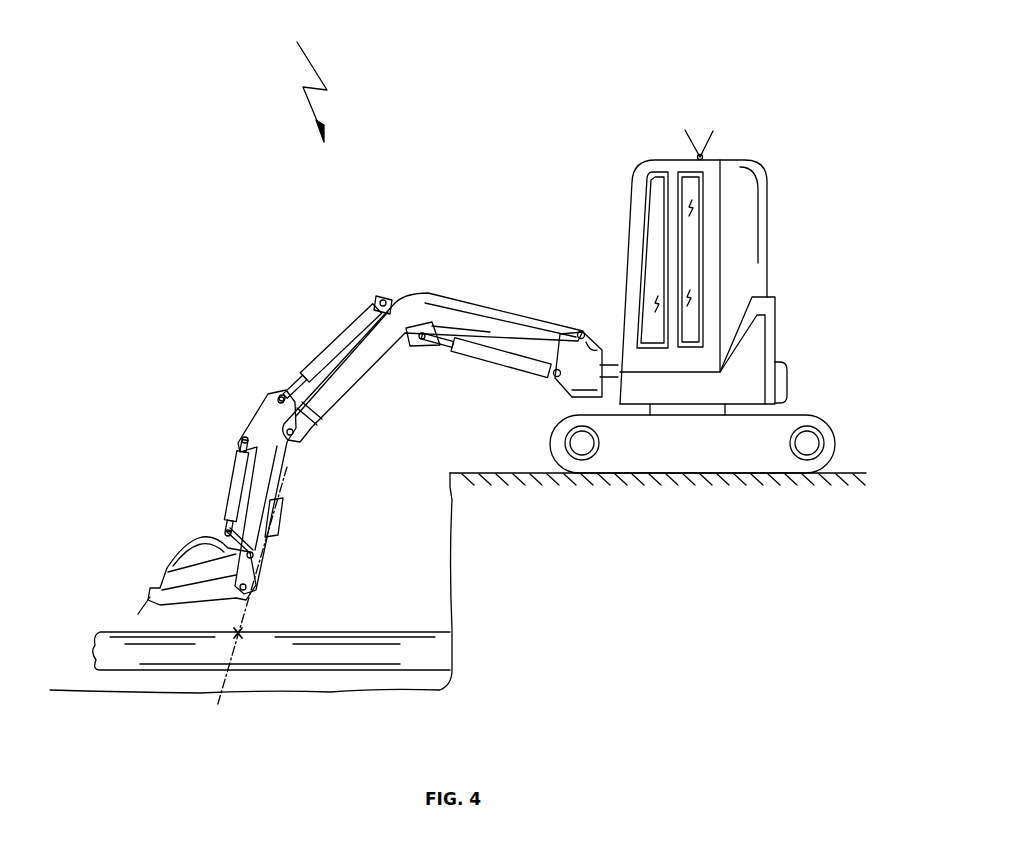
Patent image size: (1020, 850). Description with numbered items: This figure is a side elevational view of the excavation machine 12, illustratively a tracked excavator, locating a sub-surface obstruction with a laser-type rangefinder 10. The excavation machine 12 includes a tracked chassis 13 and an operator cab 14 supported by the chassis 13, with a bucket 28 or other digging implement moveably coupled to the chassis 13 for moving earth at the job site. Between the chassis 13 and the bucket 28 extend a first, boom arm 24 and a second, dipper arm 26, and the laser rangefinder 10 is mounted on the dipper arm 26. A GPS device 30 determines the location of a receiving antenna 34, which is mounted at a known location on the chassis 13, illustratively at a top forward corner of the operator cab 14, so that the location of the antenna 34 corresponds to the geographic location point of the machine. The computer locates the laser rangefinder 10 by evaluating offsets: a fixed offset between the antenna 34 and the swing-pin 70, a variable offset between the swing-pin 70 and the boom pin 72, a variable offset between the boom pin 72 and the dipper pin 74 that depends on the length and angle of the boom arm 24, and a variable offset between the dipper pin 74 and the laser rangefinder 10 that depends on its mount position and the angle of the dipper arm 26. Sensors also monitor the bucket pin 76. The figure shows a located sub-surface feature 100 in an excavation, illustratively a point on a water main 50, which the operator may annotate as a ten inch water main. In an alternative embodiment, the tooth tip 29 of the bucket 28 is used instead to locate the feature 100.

The laser rangefinder 10 is at (343, 541).
The excavation machine 12 is at (303, 79).
The tracked chassis 13 is at (753, 364).
The operator cab 14 is at (742, 231).
The boom arm 24 is at (420, 293).
The dipper arm 26 is at (278, 475).
The bucket 28 is at (198, 550).
The tooth tip 29 is at (138, 614).
The global positioning system device 30 is at (735, 90).
The receiving antenna 34 is at (712, 146).
The water main 50 is at (110, 626).
The swing-pin 70 is at (613, 382).
The boom pin 72 is at (582, 332).
The dipper pin 74 is at (297, 440).
The bucket pin 76 is at (248, 588).
The sub-surface feature 100 is at (240, 637).